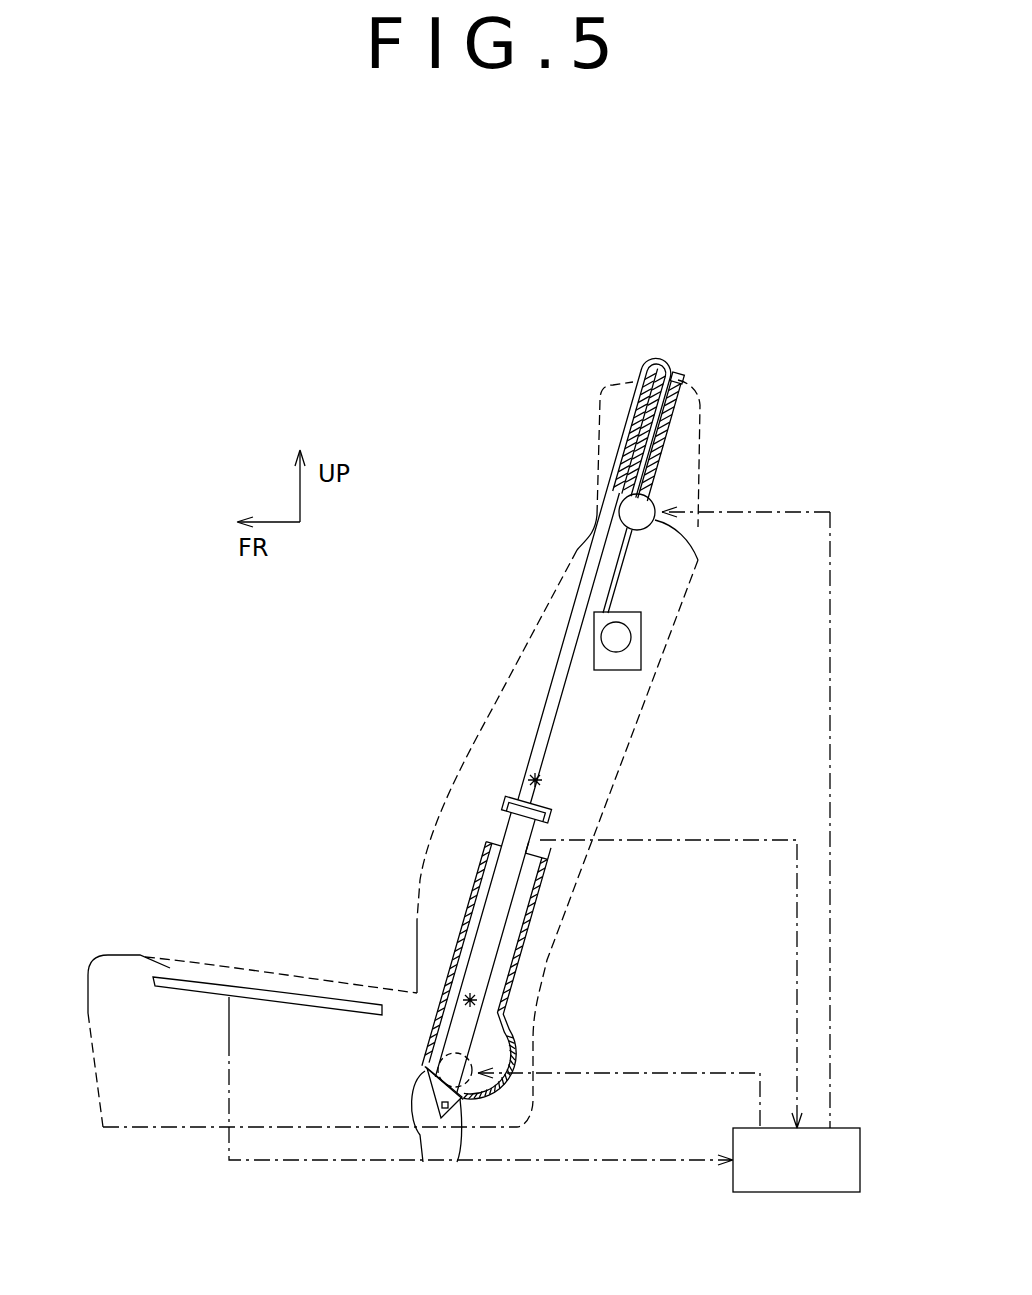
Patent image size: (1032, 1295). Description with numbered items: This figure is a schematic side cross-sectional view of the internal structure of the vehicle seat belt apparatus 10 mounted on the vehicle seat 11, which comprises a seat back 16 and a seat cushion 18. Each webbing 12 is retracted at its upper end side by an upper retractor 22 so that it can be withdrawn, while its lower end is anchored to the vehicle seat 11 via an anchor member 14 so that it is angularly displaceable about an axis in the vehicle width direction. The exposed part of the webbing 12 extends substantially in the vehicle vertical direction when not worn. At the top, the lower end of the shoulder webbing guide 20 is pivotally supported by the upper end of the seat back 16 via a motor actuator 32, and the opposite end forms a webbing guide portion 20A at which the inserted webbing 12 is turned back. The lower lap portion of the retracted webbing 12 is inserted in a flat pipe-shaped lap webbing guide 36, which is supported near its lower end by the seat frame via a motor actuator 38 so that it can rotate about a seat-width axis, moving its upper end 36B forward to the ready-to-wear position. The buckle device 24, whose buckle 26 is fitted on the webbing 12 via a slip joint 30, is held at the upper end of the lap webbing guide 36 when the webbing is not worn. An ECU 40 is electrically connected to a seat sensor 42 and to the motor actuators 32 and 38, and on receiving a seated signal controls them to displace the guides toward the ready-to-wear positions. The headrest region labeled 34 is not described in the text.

The vehicle seat belt apparatus 10 is at (667, 319).
The vehicle seat 11 is at (133, 940).
The webbing 12 is at (558, 687).
The anchor member 14 is at (449, 1115).
The seat back 16 is at (470, 768).
The seat cushion 18 is at (140, 970).
The shoulder webbing guide 20 is at (666, 443).
The webbing guide portion 20A is at (680, 362).
The upper retractor 22 is at (630, 660).
The buckle device 24 is at (484, 953).
The buckle 26 is at (548, 823).
The slip joint 30 is at (546, 808).
The motor actuator 32 is at (648, 508).
The headrest 34 is at (705, 387).
The lap webbing guide 36 is at (531, 916).
The upper end of lap webbing guide 36B is at (547, 858).
The motor actuator 38 is at (447, 1088).
The ECU 40 is at (860, 1128).
The seat sensor 42 is at (277, 990).